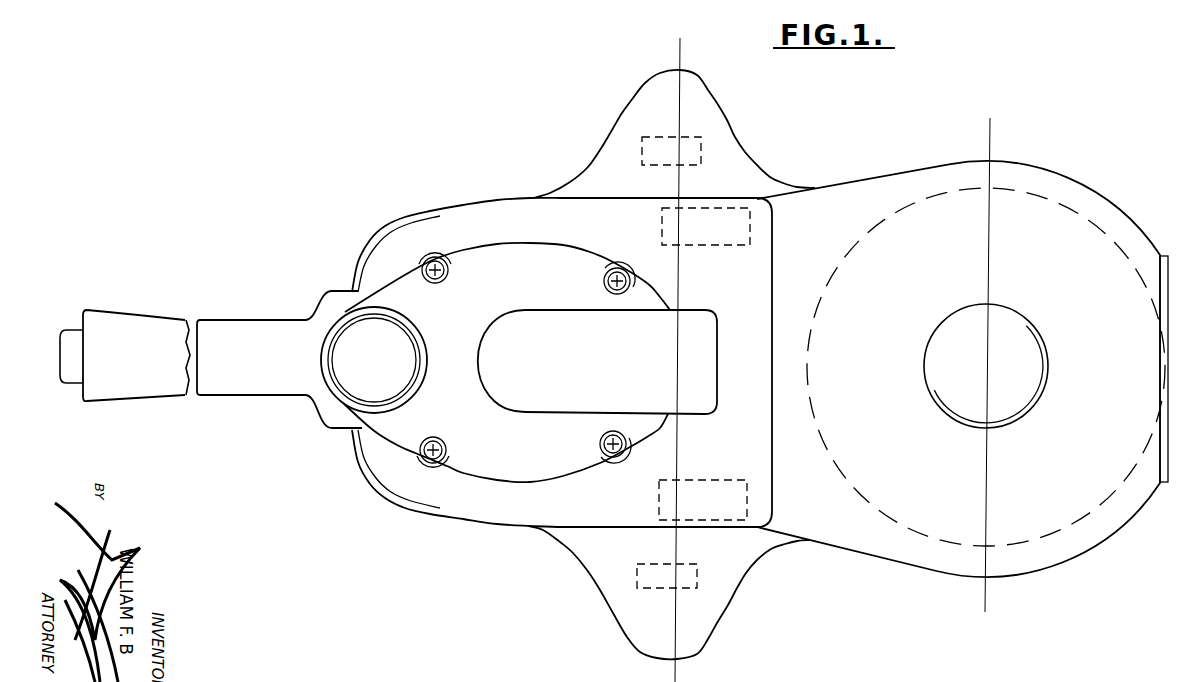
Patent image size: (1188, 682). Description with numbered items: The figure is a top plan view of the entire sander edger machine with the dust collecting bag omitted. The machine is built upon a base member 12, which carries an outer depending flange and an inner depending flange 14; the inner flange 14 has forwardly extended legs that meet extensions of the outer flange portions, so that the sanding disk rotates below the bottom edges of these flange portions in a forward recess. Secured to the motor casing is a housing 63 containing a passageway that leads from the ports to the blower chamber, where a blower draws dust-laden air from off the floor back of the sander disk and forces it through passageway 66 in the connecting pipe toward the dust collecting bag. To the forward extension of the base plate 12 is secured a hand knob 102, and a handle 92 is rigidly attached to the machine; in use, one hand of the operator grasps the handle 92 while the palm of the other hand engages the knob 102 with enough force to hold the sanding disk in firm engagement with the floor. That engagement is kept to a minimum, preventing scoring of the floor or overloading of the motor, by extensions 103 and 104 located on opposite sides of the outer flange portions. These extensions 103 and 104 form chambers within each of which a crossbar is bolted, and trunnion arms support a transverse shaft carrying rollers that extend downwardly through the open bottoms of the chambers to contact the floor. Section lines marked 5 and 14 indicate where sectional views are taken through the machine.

The base member 12 is at (840, 543).
The housing 63 is at (697, 418).
The passageway 66 is at (340, 390).
The handle 92 is at (215, 322).
The hand knob 102 is at (1048, 362).
The extension 103 is at (728, 597).
The extension 104 is at (630, 106).
The section line 5- 5 is at (650, 52).
The inner depending flange 14 is at (956, 138).